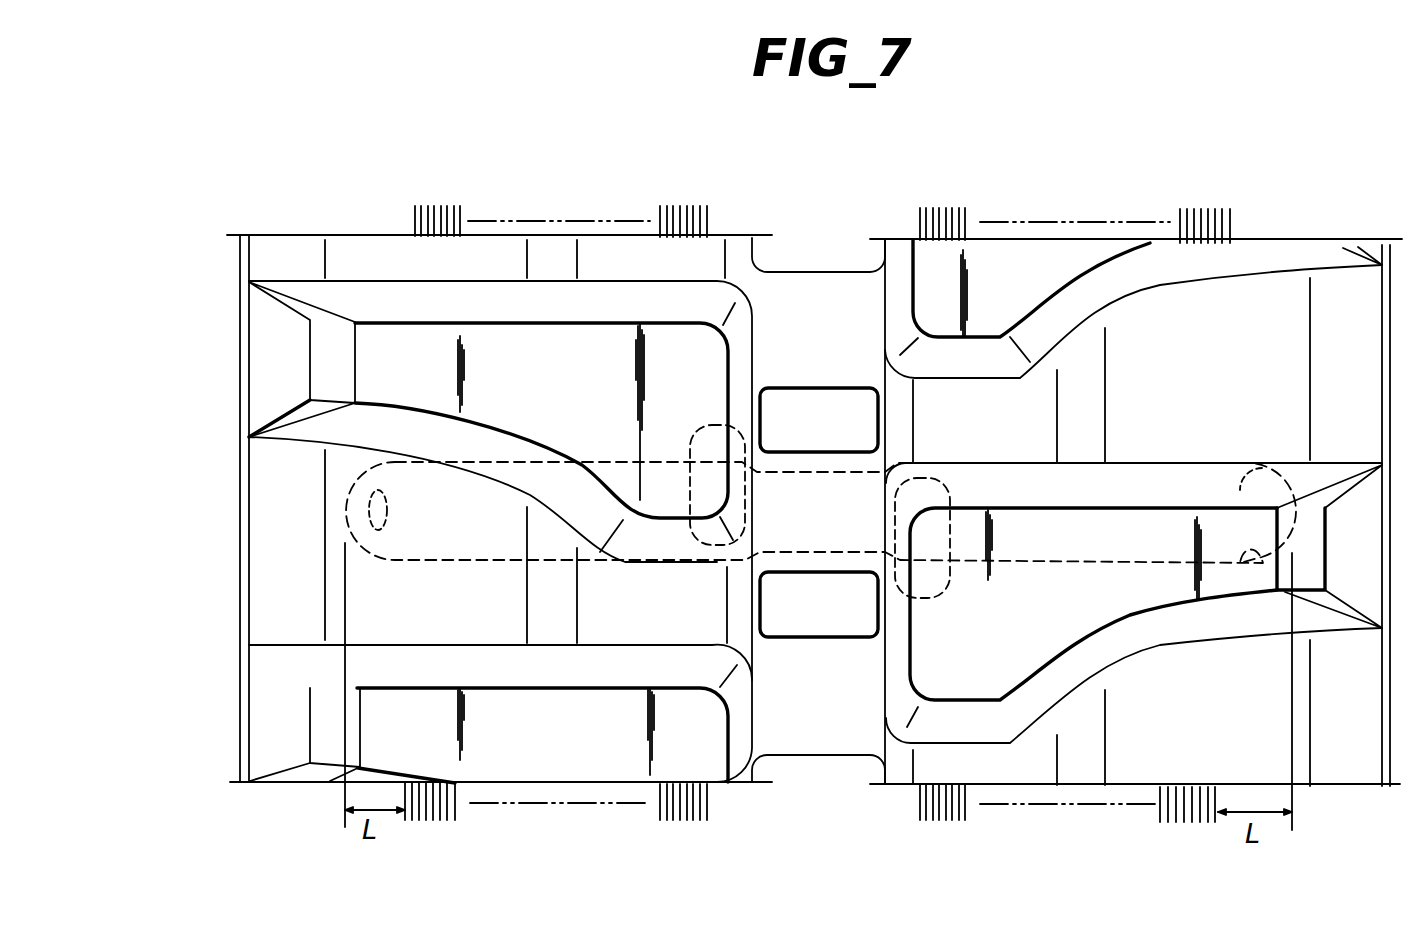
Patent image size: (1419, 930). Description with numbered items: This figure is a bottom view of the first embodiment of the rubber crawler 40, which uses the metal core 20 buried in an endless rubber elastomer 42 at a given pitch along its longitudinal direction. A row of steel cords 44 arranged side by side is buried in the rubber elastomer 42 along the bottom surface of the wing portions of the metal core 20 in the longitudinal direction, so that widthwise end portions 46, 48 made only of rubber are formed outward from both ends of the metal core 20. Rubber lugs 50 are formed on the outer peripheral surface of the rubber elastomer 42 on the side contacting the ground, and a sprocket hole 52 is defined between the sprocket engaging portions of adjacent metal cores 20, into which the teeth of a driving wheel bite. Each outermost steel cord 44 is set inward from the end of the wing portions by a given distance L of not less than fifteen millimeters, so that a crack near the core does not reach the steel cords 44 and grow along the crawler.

The metal core 20 is at (340, 532).
The rubber crawler 40 is at (1287, 243).
The rubber elastomer 42 is at (932, 760).
The steel cords 44 is at (412, 214).
The widthwise end portion 46 is at (1340, 745).
The widthwise end portion 48 is at (266, 500).
The rubber lug 50 is at (503, 357).
The sprocket hole 52 is at (808, 400).